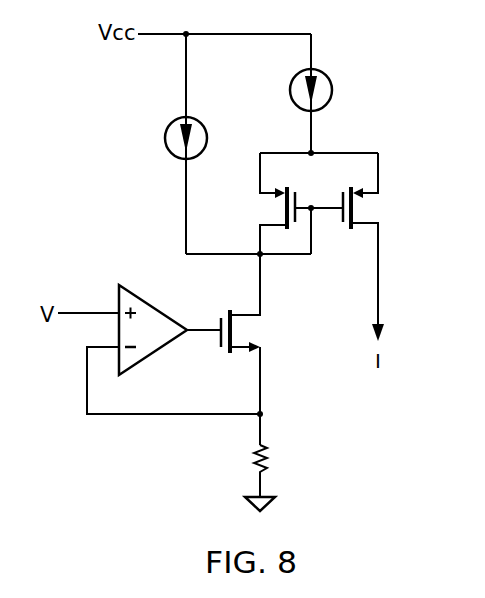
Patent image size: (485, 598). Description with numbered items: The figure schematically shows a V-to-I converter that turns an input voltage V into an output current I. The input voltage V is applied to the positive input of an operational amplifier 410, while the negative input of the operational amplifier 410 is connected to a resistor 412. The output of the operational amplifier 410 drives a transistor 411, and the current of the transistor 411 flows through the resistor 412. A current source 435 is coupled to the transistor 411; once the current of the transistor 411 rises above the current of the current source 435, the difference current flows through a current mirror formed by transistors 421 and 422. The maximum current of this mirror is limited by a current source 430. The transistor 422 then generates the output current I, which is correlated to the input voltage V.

The operational amplifier 410 is at (173, 345).
The transistor 411 is at (246, 349).
The resistor 412 is at (280, 478).
The transistor 421 is at (283, 203).
The transistor 422 is at (382, 247).
The current source 430 is at (334, 93).
The current source 435 is at (163, 144).